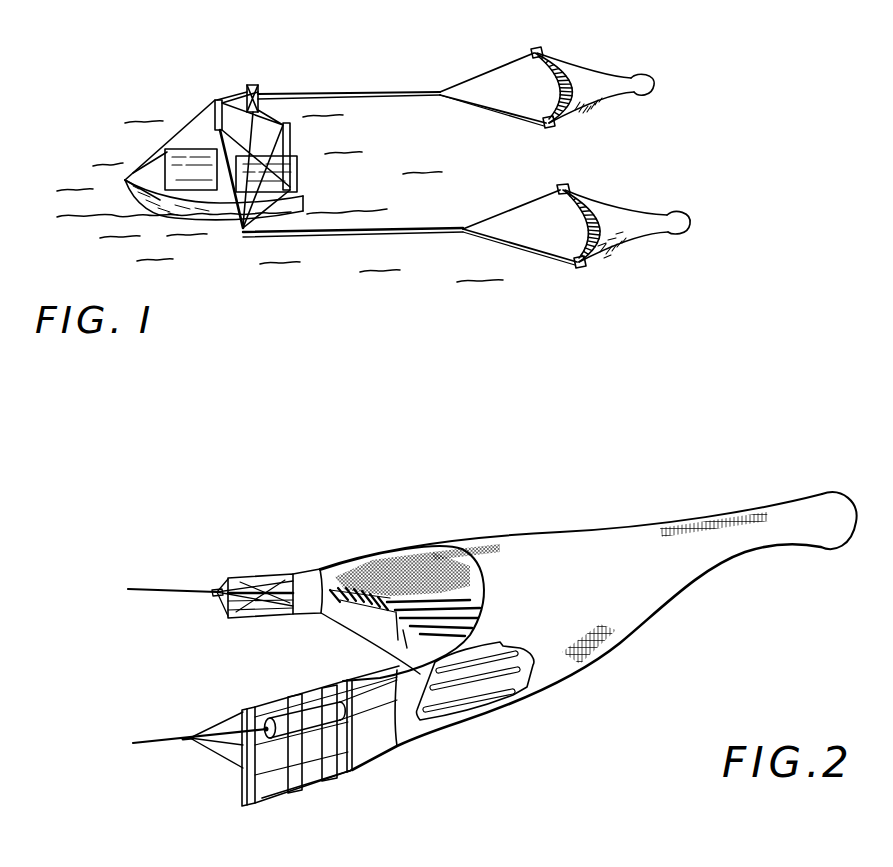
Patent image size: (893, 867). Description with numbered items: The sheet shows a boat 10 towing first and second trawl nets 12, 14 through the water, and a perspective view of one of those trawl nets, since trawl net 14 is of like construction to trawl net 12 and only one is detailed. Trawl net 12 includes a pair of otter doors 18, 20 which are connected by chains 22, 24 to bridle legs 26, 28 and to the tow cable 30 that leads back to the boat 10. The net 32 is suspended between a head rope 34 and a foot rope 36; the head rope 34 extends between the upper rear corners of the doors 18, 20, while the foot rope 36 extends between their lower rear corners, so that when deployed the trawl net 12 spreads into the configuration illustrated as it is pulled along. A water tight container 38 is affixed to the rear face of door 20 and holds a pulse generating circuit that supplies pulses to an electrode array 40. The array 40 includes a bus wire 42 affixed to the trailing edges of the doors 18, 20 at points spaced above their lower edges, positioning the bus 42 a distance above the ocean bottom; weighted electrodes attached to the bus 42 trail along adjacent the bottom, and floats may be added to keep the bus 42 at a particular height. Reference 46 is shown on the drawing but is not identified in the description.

In FIG. 1, the boat 10 is at (134, 158).
In FIG. 1, the first trawl net 12 is at (590, 59).
In FIG. 2, the first trawl net 12 is at (608, 524).
In FIG. 1, the second trawl net 14 is at (616, 208).
In FIG. 1, the otter door 18 is at (540, 50).
In FIG. 2, the otter door 18 is at (255, 578).
In FIG. 1, the otter door 20 is at (553, 124).
In FIG. 2, the otter door 20 is at (275, 783).
In FIG. 2, the chain 22 is at (222, 597).
In FIG. 2, the chain 24 is at (226, 764).
In FIG. 1, the bridle leg 26 is at (475, 88).
In FIG. 2, the bridle leg 26 is at (160, 590).
In FIG. 1, the bridle leg 28 is at (505, 113).
In FIG. 2, the bridle leg 28 is at (156, 742).
In FIG. 1, the tow cable 30 is at (365, 90).
In FIG. 2, the net 32 is at (622, 594).
In FIG. 2, the head rope 34 is at (320, 570).
In FIG. 2, the foot rope 36 is at (380, 757).
In FIG. 2, the water tight container 38 is at (327, 778).
In FIG. 1, the electrode array 40 is at (544, 89).
In FIG. 2, the electrode array 40 is at (392, 629).
In FIG. 2, the bus wire 42 is at (362, 706).
In FIG. 2, the tow line swivel 46 is at (157, 749).